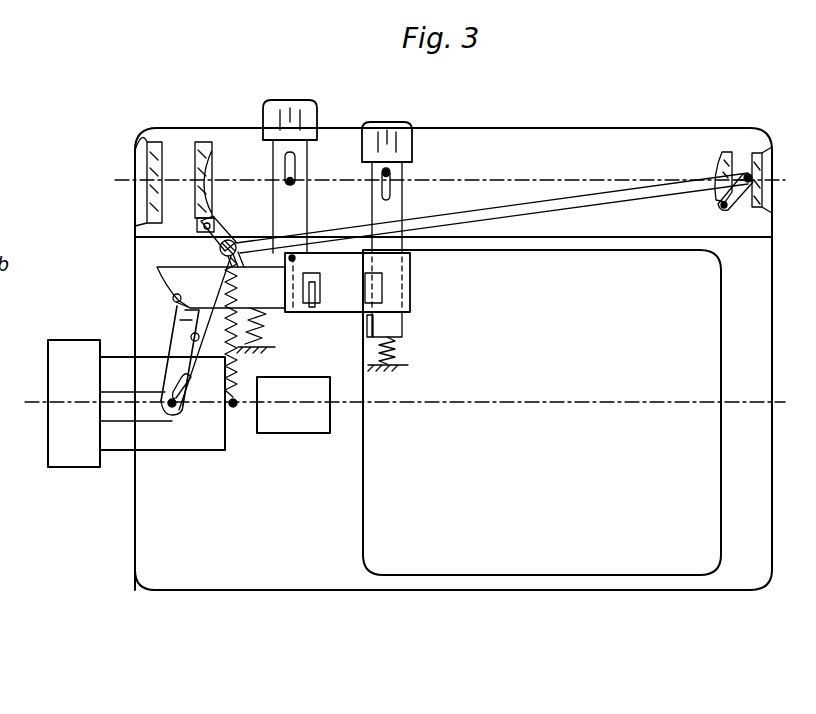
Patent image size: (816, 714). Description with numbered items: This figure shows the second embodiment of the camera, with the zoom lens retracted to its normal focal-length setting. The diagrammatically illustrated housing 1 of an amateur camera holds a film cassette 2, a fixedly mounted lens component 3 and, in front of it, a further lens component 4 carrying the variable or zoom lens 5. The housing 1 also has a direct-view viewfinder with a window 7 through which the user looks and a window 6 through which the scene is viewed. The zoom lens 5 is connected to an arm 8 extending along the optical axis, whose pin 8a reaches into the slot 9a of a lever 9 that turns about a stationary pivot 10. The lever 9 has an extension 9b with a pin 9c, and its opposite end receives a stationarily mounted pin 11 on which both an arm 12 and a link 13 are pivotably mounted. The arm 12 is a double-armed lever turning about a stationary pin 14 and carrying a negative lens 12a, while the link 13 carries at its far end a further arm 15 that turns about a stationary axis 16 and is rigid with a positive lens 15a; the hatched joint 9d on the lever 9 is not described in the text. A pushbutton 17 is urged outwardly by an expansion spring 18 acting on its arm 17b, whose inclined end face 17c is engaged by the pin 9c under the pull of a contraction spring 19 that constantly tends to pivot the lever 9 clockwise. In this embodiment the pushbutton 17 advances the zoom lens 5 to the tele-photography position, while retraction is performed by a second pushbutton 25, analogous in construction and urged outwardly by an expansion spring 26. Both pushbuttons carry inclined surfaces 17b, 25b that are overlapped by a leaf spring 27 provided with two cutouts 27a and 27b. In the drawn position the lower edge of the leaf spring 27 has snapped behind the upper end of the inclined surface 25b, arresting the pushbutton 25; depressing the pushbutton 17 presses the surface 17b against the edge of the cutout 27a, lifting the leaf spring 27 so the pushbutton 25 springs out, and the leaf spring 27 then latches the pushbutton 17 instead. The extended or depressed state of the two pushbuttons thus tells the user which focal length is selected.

The housing 1 is at (755, 462).
The film cassette 2 is at (706, 428).
The lens component 3 is at (318, 422).
The further lens component 4 is at (214, 428).
The zoom lens 5 is at (58, 437).
The window 6 is at (155, 150).
The window 7 is at (756, 150).
The arm 8 is at (106, 412).
The pin 8a is at (178, 415).
The lever 9 is at (192, 317).
The slot 9a is at (181, 383).
The extension 9b is at (170, 306).
The pin 9c is at (172, 298).
The lever pivot 9d is at (219, 252).
The stationary pivot 10 is at (180, 325).
The stationarily mounted pin 11 is at (200, 227).
The arm 12 is at (220, 232).
The negative lens 12a is at (205, 148).
The link 13 is at (492, 208).
The stationary pin 14 is at (211, 222).
The further arm 15 is at (757, 187).
The positive lens 15a is at (722, 165).
The stationary axis 16 is at (742, 207).
The pushbutton 17 is at (302, 118).
The arm 17b is at (313, 307).
The inclined end face 17c is at (158, 278).
The expansion spring 18 is at (268, 337).
The contraction spring 19 is at (244, 292).
The second pushbutton 25 is at (396, 140).
The inclined surface 25b is at (372, 330).
The expansion spring 26 is at (401, 348).
The leaf spring 27 is at (413, 297).
The cutout 27a is at (320, 283).
The cutout 27b is at (388, 280).